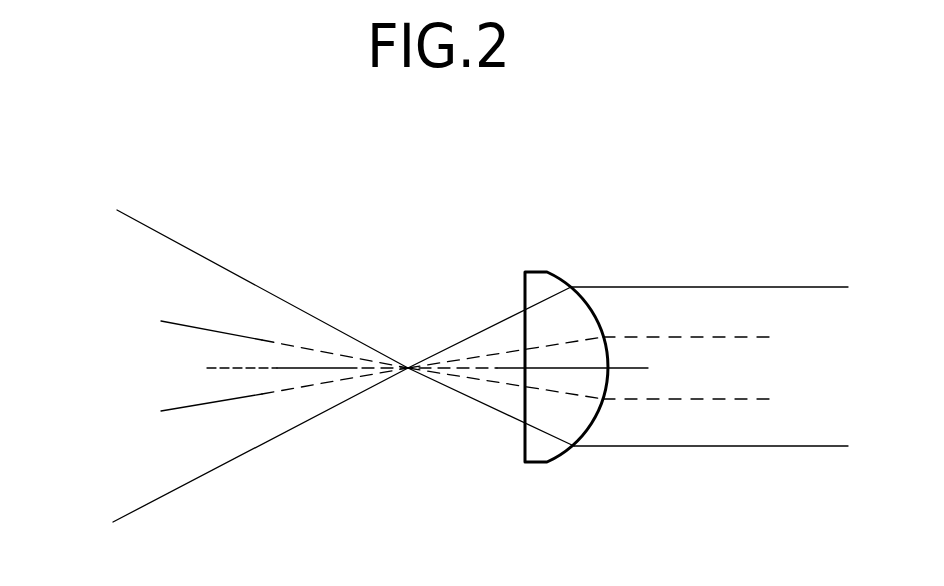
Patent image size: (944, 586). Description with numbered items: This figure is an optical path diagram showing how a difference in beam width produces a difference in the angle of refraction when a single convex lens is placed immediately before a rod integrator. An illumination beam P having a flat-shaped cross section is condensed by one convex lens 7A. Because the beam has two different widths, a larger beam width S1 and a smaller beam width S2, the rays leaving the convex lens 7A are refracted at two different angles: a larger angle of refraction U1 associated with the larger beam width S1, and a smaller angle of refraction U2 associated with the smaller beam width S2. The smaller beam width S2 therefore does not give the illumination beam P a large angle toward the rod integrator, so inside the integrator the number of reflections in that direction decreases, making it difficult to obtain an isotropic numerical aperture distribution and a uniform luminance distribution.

The angle of refraction U1 is at (127, 215).
The angle of refraction U2 is at (173, 323).
The convex lens 7A is at (537, 464).
The illumination beam P is at (693, 472).
The beam width S1 is at (835, 287).
The beam width S2 is at (756, 337).